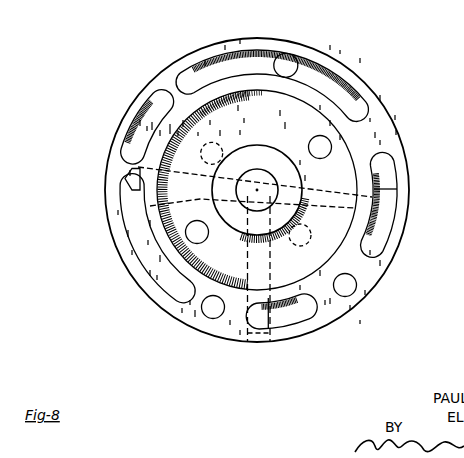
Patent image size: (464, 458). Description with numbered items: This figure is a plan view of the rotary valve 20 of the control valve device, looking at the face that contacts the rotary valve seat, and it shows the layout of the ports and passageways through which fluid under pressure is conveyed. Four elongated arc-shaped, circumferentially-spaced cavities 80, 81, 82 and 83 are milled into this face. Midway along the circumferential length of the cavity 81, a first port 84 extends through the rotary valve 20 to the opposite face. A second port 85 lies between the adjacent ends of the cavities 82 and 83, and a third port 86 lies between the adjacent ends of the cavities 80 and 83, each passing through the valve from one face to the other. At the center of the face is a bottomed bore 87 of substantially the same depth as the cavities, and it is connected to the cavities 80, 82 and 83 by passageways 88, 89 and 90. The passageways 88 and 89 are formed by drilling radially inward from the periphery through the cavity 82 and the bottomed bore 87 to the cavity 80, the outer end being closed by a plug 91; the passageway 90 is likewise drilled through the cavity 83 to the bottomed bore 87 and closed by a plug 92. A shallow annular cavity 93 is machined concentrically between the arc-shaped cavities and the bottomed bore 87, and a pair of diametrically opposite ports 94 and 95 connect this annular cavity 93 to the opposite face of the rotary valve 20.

The rotary valve 20 is at (387, 264).
The cavity 80 is at (162, 276).
The cavity 81 is at (217, 72).
The cavity 82 is at (387, 170).
The cavity 83 is at (309, 311).
The first port 84 is at (289, 64).
The second port 85 is at (348, 287).
The third port 86 is at (208, 309).
The bottomed bore 87 is at (261, 183).
The passageway 88 is at (150, 206).
The passageway 89 is at (355, 208).
The passageway 90 is at (255, 280).
The plug 91 is at (397, 200).
The plug 92 is at (262, 337).
The annular cavity 93 is at (322, 125).
The port 94 is at (192, 234).
The port 95 is at (326, 146).